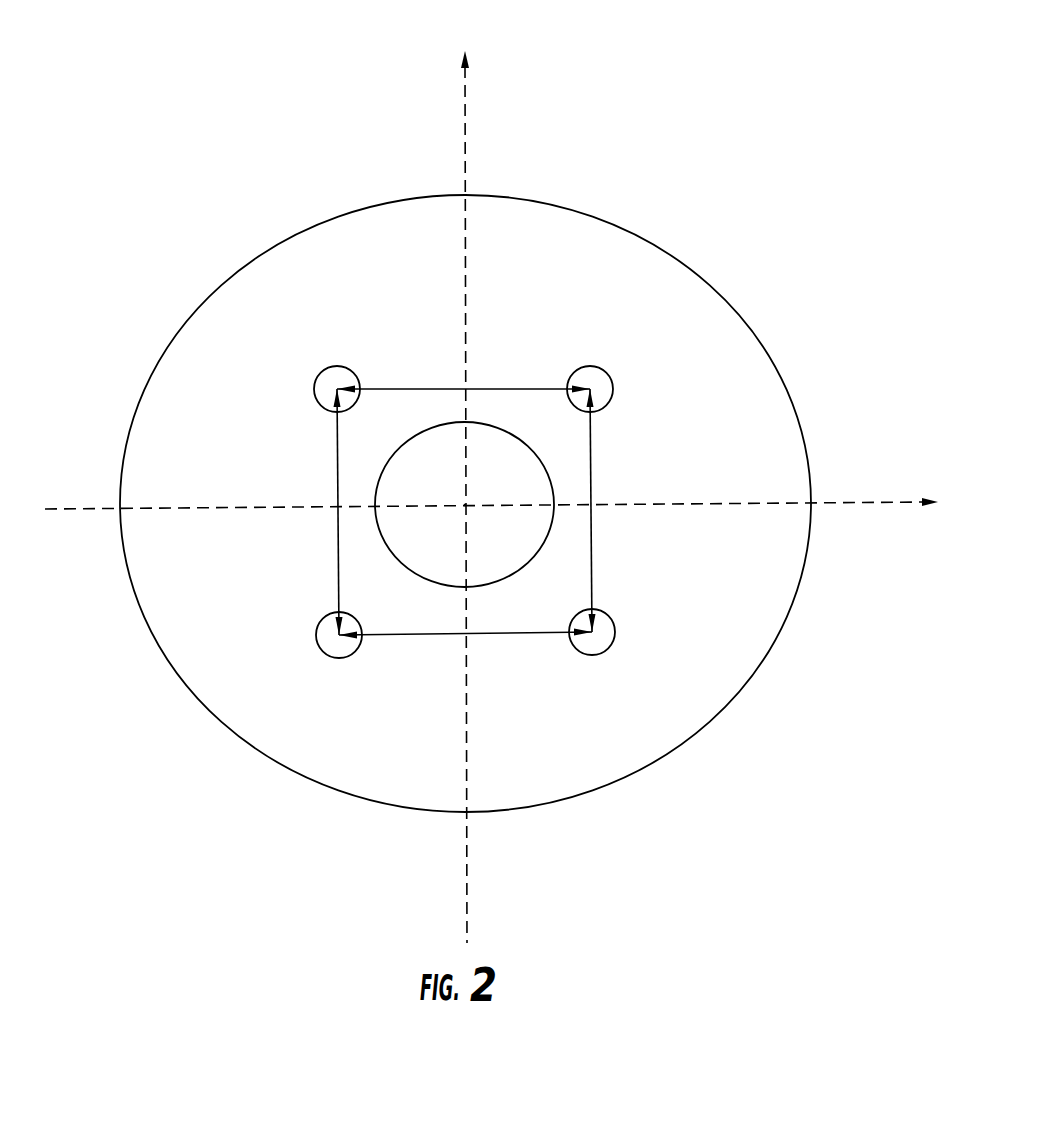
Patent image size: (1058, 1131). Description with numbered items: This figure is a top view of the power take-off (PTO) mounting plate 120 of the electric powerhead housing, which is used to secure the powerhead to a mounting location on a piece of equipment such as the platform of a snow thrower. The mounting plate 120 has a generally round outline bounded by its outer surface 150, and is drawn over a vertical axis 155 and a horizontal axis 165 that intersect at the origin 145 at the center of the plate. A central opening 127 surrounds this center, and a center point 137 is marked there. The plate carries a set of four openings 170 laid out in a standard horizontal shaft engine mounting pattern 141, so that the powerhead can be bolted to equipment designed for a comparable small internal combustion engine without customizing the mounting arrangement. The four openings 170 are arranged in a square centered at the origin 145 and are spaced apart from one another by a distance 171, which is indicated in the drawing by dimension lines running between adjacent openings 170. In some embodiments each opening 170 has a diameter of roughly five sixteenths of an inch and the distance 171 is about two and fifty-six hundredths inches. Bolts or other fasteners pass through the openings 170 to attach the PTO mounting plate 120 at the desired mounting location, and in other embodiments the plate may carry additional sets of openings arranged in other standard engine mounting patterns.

The PTO mounting plate 120 is at (678, 218).
The central opening 127 is at (497, 427).
The center point 137 is at (462, 508).
The hole pattern 141 is at (420, 388).
The origin 145 is at (468, 500).
The outer surface 150 is at (700, 313).
The Y axis 155 is at (466, 97).
The X axis 165 is at (862, 502).
The openings 170 is at (333, 367).
The distance 171 is at (340, 465).